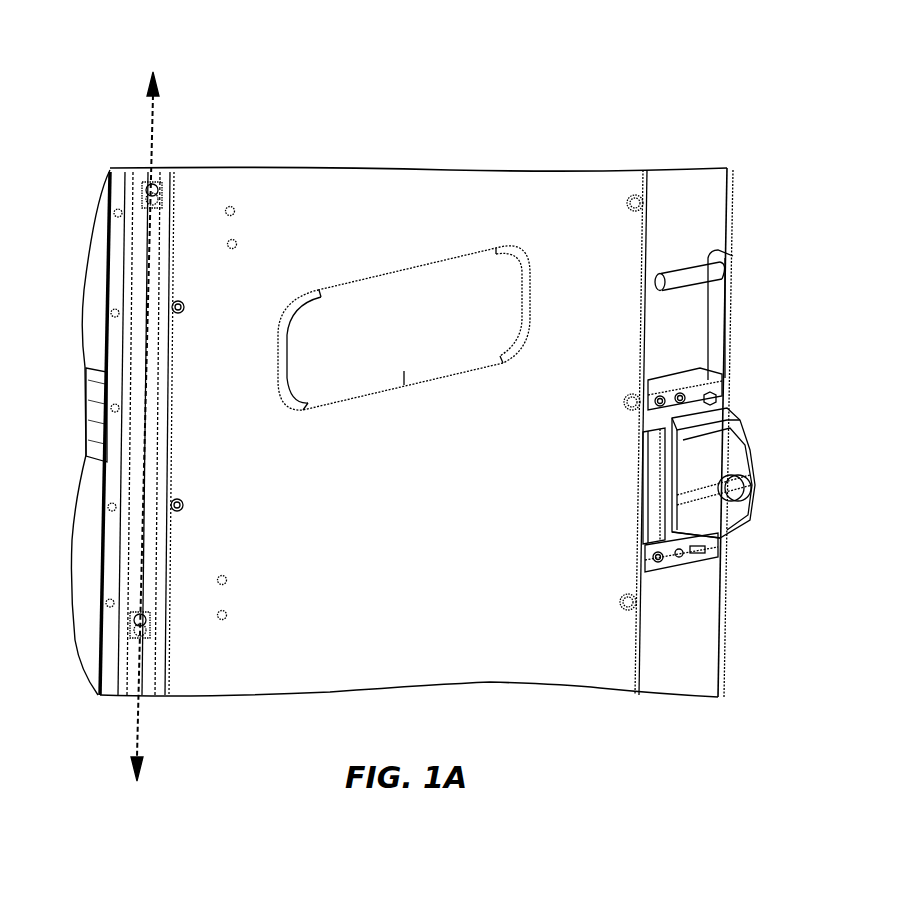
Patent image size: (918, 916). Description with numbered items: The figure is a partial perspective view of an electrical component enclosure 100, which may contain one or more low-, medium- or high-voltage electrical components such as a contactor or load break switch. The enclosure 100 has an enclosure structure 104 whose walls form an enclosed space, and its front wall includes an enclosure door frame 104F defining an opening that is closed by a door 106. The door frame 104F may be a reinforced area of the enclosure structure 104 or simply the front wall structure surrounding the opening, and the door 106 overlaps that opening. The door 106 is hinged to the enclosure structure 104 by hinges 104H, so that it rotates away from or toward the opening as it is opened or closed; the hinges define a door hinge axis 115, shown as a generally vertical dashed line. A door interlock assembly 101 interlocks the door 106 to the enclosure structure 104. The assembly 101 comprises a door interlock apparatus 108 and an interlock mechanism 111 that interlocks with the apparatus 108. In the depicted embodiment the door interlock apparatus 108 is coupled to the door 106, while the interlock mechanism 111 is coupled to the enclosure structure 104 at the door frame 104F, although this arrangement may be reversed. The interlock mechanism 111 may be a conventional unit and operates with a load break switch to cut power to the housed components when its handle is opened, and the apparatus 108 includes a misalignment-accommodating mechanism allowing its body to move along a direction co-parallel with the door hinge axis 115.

The electrical component enclosure 100 is at (460, 138).
The door interlock assembly 101 is at (670, 600).
The enclosure structure 104 is at (94, 184).
The enclosure door frame 104F is at (675, 221).
The hinge 104H is at (160, 168).
The door 106 is at (422, 592).
The door interlock apparatus 108 is at (630, 482).
The interlock mechanism 111 is at (738, 440).
The door hinge axis 115 is at (153, 108).